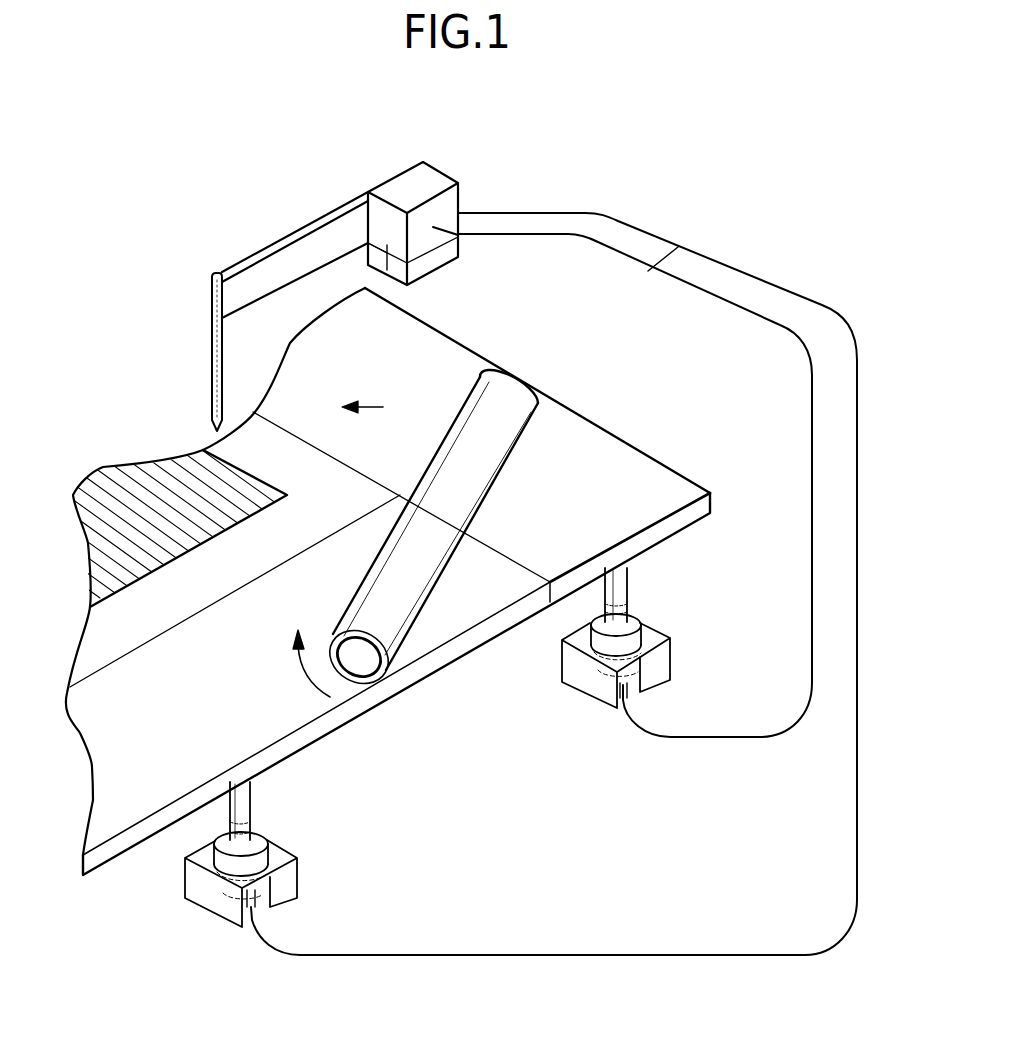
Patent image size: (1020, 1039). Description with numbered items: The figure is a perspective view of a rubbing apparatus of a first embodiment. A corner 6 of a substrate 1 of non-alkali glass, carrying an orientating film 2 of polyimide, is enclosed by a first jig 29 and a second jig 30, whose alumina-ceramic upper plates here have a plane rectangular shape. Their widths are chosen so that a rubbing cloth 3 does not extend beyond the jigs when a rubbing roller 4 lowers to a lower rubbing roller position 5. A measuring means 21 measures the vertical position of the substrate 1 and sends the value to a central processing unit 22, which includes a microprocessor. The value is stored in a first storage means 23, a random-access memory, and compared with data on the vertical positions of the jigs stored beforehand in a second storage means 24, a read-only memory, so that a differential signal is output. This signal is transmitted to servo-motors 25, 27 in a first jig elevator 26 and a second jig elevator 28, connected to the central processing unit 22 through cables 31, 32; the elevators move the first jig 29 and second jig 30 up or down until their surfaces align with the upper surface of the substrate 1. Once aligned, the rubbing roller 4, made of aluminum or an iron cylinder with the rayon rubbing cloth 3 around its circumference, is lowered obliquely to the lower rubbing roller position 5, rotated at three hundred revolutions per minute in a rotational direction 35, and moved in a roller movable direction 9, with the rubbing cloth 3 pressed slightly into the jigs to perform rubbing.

The substrate 1 is at (237, 443).
The orientating film 2 is at (127, 490).
The rubbing cloth 3 is at (377, 683).
The rubbing roller 4 is at (358, 667).
The lower rubbing roller position 5 is at (500, 463).
The corner 6 is at (400, 495).
The roller movable direction 9 is at (367, 407).
The measuring means 21 is at (212, 307).
The central processing unit 22 is at (450, 204).
The first storage means 23 is at (377, 258).
The second storage means 24 is at (398, 268).
The servo-motor 25 is at (624, 687).
The first jig elevator 26 is at (633, 620).
The servo-motor 27 is at (252, 906).
The second jig elevator 28 is at (262, 838).
The first jig 29 is at (648, 482).
The second jig 30 is at (470, 603).
The cable 31 is at (677, 247).
The cable 32 is at (763, 283).
The rotational direction 35 is at (303, 670).